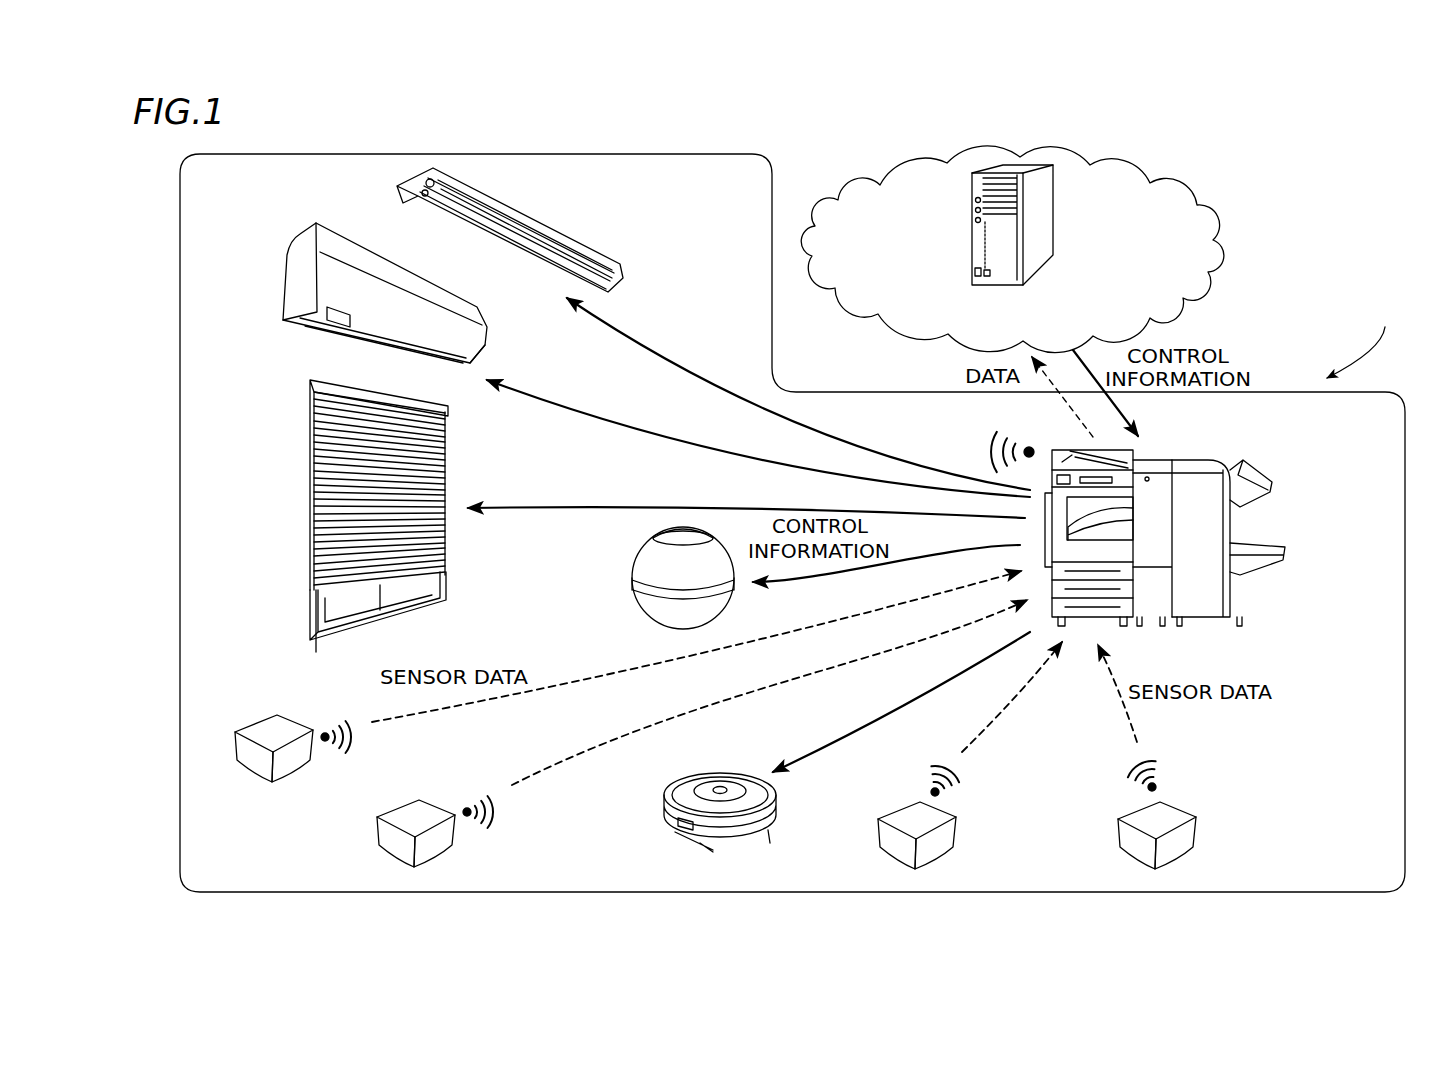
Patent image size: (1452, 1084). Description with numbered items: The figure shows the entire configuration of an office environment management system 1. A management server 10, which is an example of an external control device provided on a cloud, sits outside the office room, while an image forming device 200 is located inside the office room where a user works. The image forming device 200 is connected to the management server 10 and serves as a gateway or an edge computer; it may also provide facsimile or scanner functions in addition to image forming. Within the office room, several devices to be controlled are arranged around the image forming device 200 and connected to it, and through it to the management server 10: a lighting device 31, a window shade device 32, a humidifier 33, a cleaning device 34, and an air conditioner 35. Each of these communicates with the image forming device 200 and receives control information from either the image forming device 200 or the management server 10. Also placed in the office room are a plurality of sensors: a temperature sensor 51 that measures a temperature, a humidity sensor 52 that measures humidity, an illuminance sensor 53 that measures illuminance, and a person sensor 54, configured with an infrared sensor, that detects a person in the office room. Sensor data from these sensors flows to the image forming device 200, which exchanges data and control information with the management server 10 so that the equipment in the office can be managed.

The office environment management system 1 is at (1328, 227).
The management server 10 is at (877, 196).
The image forming device 200 is at (1265, 450).
The lighting device 31 is at (386, 202).
The air conditioner 35 is at (292, 341).
The window shade device 32 is at (299, 561).
The humidifier 33 is at (628, 597).
The cleaning device 34 is at (752, 851).
The temperature sensor 51 is at (1214, 822).
The humidity sensor 52 is at (971, 821).
The illuminance sensor 53 is at (268, 792).
The person sensor 54 is at (468, 850).